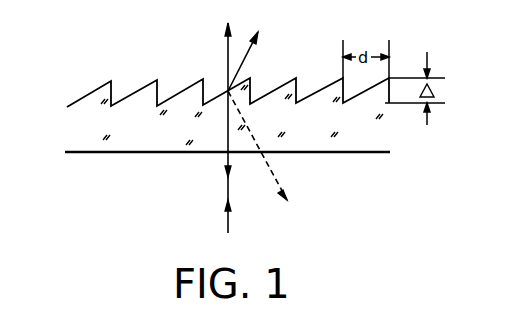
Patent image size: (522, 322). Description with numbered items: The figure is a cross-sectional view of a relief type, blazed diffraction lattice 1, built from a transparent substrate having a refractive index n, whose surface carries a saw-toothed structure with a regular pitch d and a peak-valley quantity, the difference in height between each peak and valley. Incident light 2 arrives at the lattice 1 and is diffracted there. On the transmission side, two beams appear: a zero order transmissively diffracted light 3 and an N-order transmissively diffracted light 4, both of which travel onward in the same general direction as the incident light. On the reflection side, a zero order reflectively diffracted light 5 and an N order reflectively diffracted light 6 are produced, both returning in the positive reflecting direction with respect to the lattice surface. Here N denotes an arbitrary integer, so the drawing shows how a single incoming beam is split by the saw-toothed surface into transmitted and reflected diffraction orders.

The blazed type diffraction lattice 1 is at (78, 132).
The incident light 2 is at (226, 207).
The zero order transmissively diffracted light 3 is at (236, 22).
The N-order transmissively diffracted light 4 is at (259, 33).
The zero order reflectively diffracted light 5 is at (226, 171).
The N order reflectively diffracted light 6 is at (283, 197).